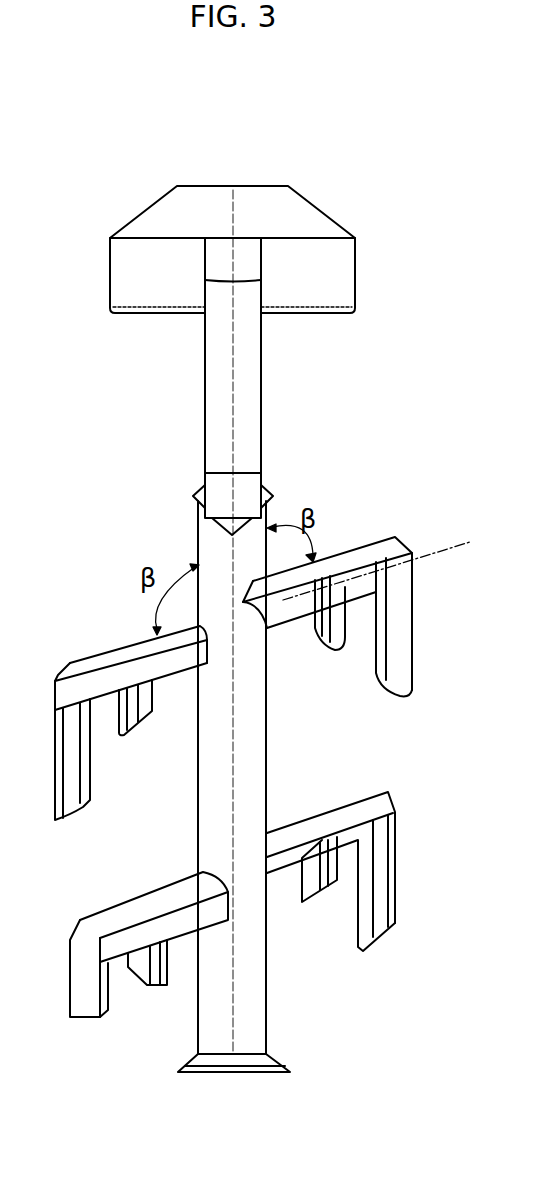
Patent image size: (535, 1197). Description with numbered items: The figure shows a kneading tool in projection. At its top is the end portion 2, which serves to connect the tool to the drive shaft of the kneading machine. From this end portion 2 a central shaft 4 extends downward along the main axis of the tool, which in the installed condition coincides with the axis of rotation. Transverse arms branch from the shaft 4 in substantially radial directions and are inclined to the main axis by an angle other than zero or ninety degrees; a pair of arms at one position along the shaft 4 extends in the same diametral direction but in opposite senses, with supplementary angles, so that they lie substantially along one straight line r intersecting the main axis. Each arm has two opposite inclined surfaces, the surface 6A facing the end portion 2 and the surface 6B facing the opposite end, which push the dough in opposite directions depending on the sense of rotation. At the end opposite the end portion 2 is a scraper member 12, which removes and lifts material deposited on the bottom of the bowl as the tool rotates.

The end portion 2 is at (110, 242).
The central shaft 4 is at (257, 758).
The arm surface 6A is at (82, 660).
The arm surface 6B is at (365, 550).
The scraper member 12 is at (290, 1057).
The straight line r is at (432, 554).